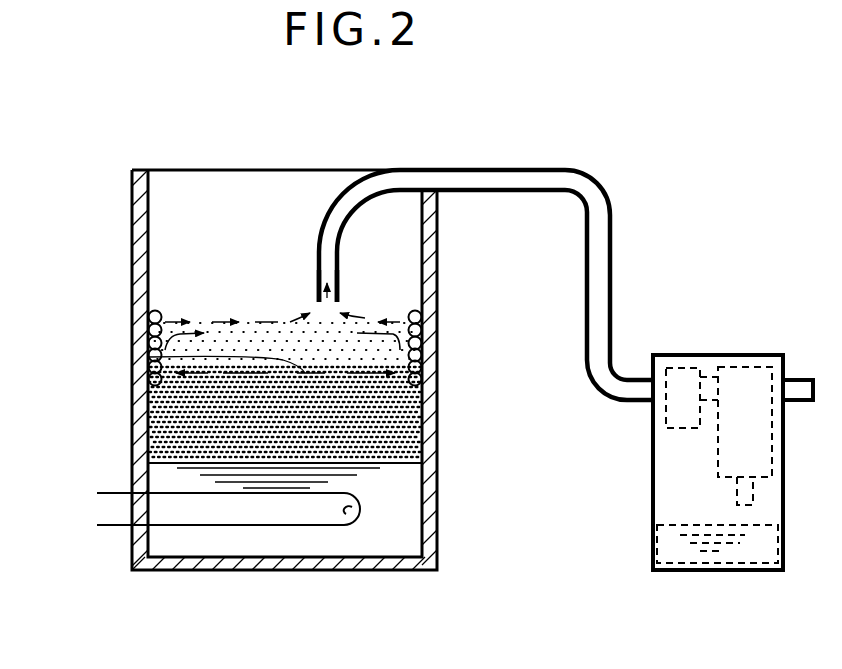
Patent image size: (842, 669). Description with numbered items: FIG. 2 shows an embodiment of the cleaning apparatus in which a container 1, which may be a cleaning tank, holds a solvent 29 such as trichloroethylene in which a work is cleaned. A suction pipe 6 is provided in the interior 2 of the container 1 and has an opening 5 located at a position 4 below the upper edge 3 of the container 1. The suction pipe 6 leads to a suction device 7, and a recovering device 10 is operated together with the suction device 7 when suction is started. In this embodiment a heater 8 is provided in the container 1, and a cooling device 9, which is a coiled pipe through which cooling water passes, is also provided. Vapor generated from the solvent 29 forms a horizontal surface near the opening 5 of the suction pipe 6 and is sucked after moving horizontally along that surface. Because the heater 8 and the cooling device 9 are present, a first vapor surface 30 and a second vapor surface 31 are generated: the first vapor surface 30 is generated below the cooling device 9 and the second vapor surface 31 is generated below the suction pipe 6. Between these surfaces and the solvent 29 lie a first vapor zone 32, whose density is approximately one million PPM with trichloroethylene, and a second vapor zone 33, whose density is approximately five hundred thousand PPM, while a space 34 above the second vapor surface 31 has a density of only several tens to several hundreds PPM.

The container 1 is at (132, 470).
The interior 2 is at (223, 197).
The upper edge 3 is at (150, 170).
The position 4 is at (350, 307).
The opening 5 is at (322, 305).
The suction pipe 6 is at (342, 196).
The suction device 7 is at (678, 367).
The heater 8 is at (206, 526).
The cooling device 9 is at (158, 305).
The recovering device 10 is at (750, 367).
The solvent 29 is at (283, 537).
The first vapor surface 30 is at (150, 355).
The second vapor surface 31 is at (275, 318).
The first vapor zone 32 is at (365, 448).
The second vapor zone 33 is at (240, 340).
The space 34 is at (197, 210).